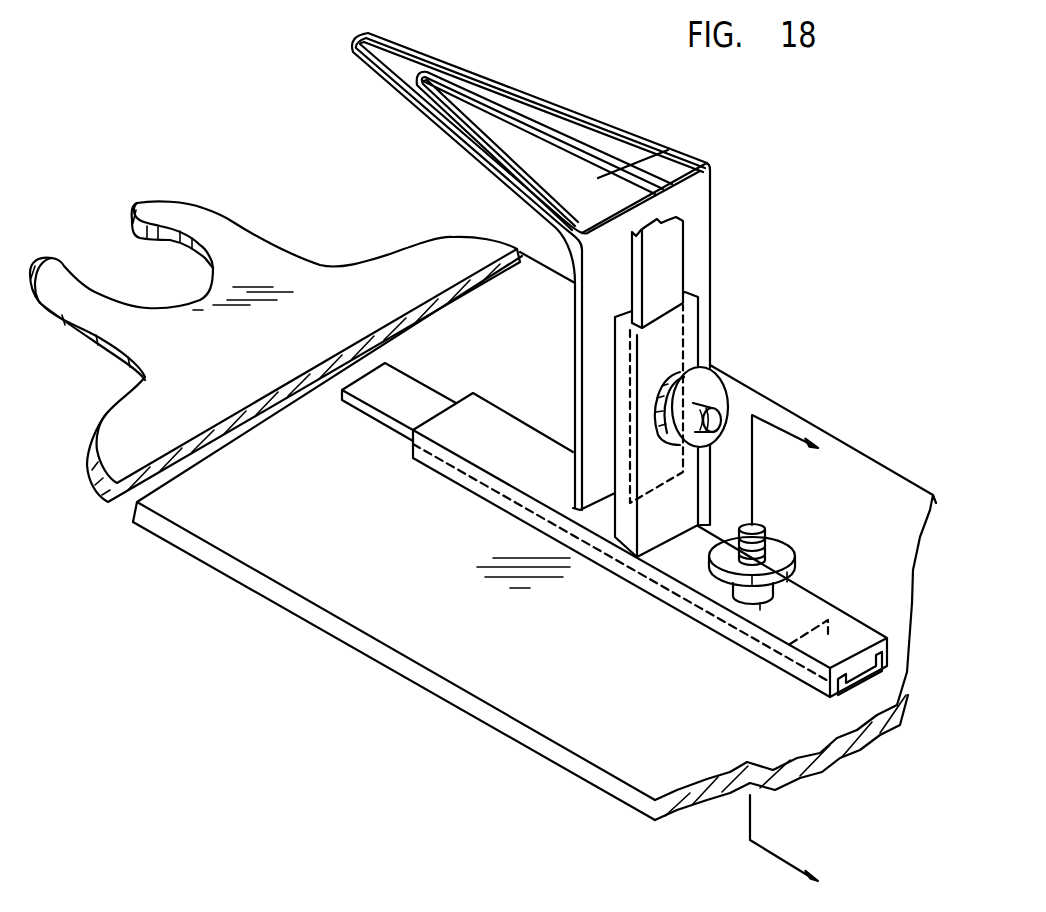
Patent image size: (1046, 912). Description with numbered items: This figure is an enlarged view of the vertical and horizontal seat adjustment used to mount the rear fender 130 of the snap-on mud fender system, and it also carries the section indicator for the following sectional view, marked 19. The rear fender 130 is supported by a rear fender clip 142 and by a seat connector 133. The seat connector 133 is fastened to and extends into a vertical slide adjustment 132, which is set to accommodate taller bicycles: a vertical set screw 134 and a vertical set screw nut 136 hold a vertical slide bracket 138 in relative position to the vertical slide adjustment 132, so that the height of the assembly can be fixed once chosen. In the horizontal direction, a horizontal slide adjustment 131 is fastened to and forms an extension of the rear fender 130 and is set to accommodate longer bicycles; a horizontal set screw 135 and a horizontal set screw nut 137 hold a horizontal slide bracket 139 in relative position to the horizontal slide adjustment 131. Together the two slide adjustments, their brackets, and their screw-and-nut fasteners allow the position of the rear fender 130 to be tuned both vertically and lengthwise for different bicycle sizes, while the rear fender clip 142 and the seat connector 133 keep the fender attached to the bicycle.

The rear fender 130 is at (345, 557).
The horizontal slide adjustment 131 is at (373, 410).
The vertical slide adjustment 132 is at (667, 260).
The seat connector 133 is at (622, 172).
The vertical set screw 134 is at (716, 423).
The horizontal set screw 135 is at (754, 525).
The vertical set screw nut 136 is at (720, 390).
The horizontal set screw nut 137 is at (778, 553).
The vertical slide bracket 138 is at (673, 343).
The horizontal slide bracket 139 is at (690, 603).
The rear fender clip 142 is at (233, 219).
The section line 19- 19 is at (796, 657).